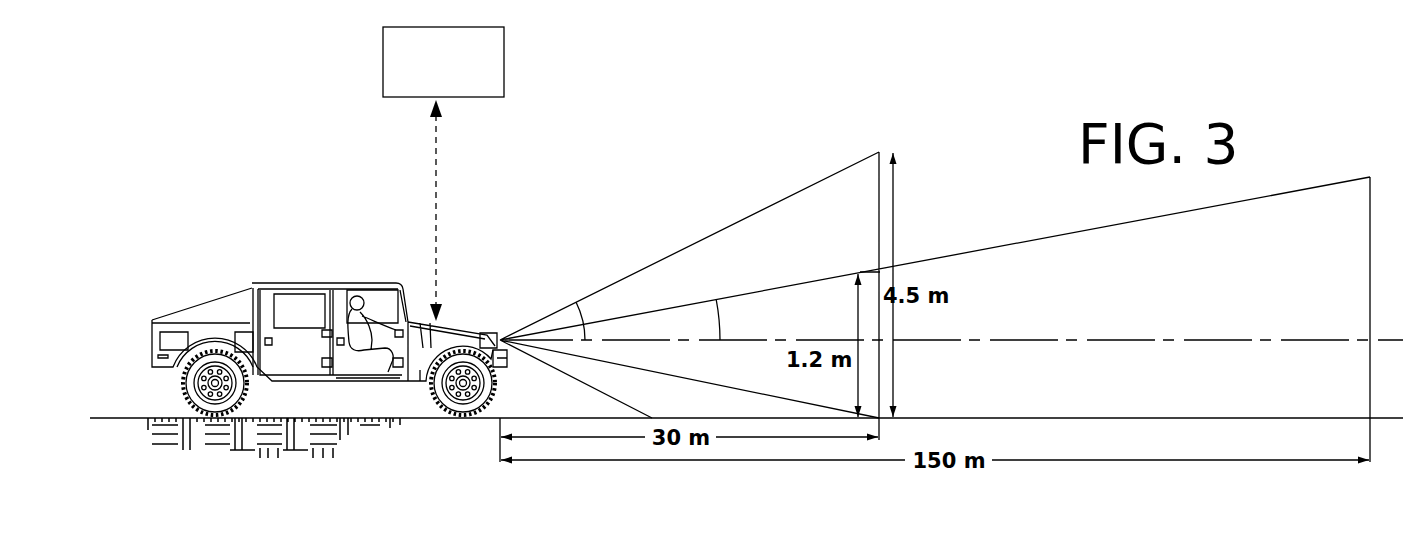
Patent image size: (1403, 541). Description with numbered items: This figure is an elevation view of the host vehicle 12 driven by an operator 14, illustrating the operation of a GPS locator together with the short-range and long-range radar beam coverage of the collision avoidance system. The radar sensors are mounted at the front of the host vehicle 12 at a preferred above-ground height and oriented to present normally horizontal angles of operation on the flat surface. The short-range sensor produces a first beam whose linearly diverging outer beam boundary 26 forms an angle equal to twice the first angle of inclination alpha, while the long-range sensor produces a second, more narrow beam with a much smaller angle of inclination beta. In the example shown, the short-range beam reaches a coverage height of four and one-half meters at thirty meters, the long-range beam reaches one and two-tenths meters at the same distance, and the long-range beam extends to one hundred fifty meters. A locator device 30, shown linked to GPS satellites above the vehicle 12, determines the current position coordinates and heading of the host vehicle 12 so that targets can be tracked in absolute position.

The host vehicle 12 is at (226, 291).
The operator 14 is at (349, 297).
The locator device 30 is at (478, 218).
The outer beam boundary 26 is at (688, 245).